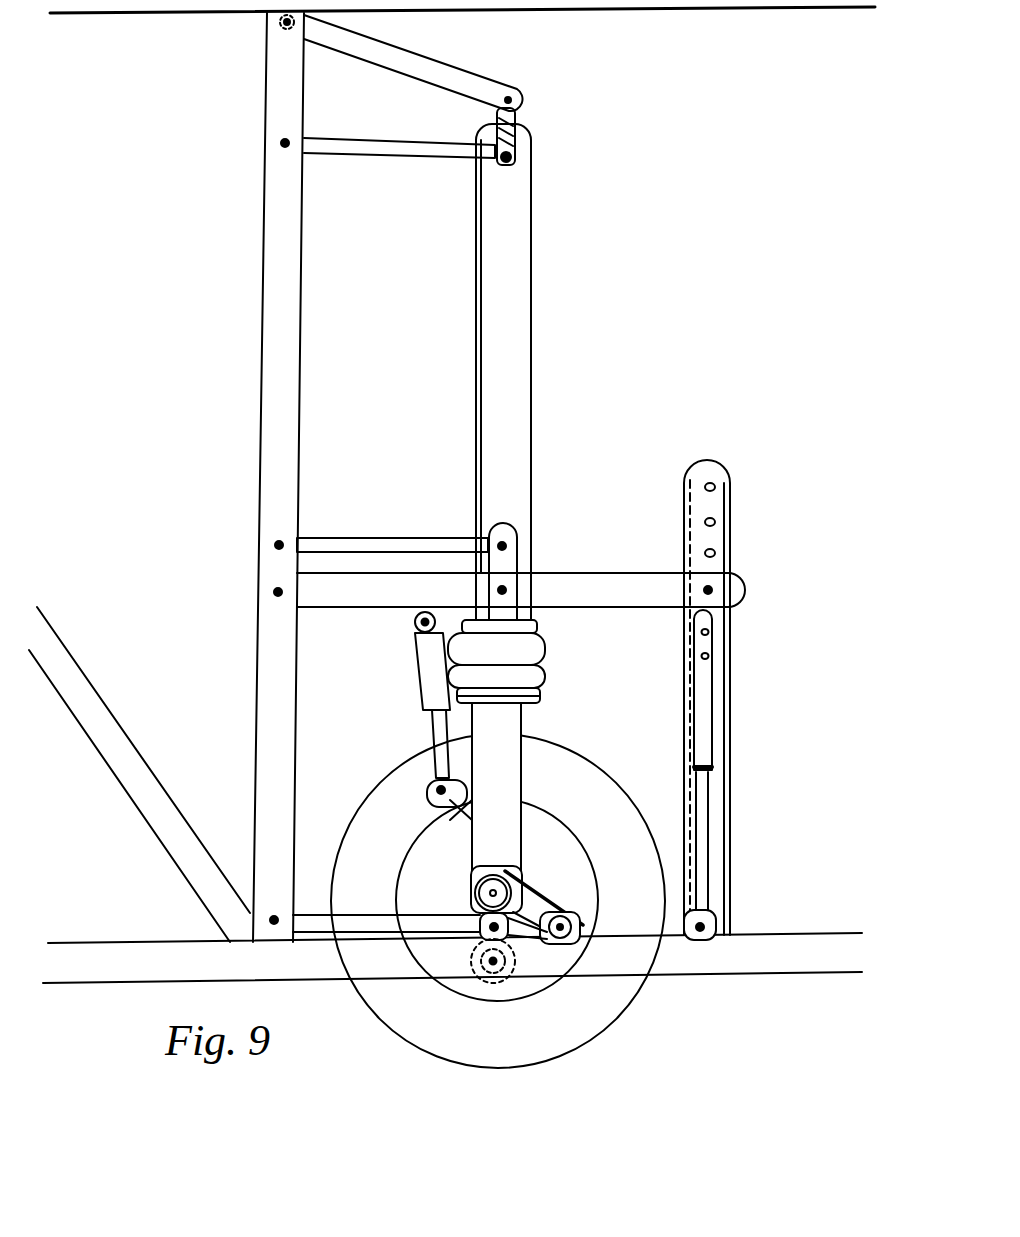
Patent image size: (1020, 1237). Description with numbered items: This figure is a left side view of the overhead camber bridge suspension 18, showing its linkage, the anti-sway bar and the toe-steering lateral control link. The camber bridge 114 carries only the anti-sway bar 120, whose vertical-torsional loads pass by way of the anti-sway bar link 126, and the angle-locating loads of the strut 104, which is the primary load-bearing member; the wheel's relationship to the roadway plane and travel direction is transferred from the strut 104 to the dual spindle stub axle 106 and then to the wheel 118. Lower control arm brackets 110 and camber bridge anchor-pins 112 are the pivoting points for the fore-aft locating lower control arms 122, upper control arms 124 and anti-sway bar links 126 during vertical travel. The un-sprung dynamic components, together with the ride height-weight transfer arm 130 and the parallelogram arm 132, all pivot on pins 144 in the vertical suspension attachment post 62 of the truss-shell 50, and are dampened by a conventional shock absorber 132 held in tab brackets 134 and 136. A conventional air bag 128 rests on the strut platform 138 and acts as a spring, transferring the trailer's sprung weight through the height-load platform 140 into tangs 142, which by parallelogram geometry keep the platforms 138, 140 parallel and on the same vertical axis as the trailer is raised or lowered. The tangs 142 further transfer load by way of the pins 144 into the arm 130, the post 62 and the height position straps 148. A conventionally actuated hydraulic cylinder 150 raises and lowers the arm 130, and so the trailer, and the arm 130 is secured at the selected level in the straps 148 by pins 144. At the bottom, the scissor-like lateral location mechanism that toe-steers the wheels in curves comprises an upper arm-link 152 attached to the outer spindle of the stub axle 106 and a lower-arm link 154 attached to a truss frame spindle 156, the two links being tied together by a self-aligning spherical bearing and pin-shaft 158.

The overhead camber bridge suspension 18 is at (551, 113).
The truss-shell 50 is at (797, 1002).
The vertical suspension attachment post 62 is at (283, 300).
The strut 104 is at (497, 736).
The dual spindle stub axle 106 is at (478, 877).
The lower control arm bracket 110 is at (487, 940).
The camber bridge anchor-pin 112 is at (513, 165).
The camber bridge 114 is at (507, 272).
The wheel 118 is at (622, 763).
The anti-sway bar 120 is at (413, 66).
The lower control arm 122 is at (455, 927).
The upper control arm 124 is at (366, 150).
The anti-sway bar link 126 is at (513, 138).
The air bag 128 is at (528, 650).
The ride height-weight transfer arm 130 is at (568, 590).
The parallelogram arm 132 is at (380, 545).
The tab bracket 134 is at (412, 620).
The tab bracket 136 is at (430, 788).
The strut platform 138 is at (530, 700).
The height-load platform 140 is at (542, 622).
The tang 142 is at (508, 557).
The pin 144 is at (283, 147).
The height position strap 148 is at (723, 482).
The hydraulic cylinder 150 is at (712, 705).
The upper arm-link 152 is at (547, 905).
The lower-arm link 154 is at (533, 943).
The truss frame spindle 156 is at (505, 965).
The pin-shaft 158 is at (582, 921).